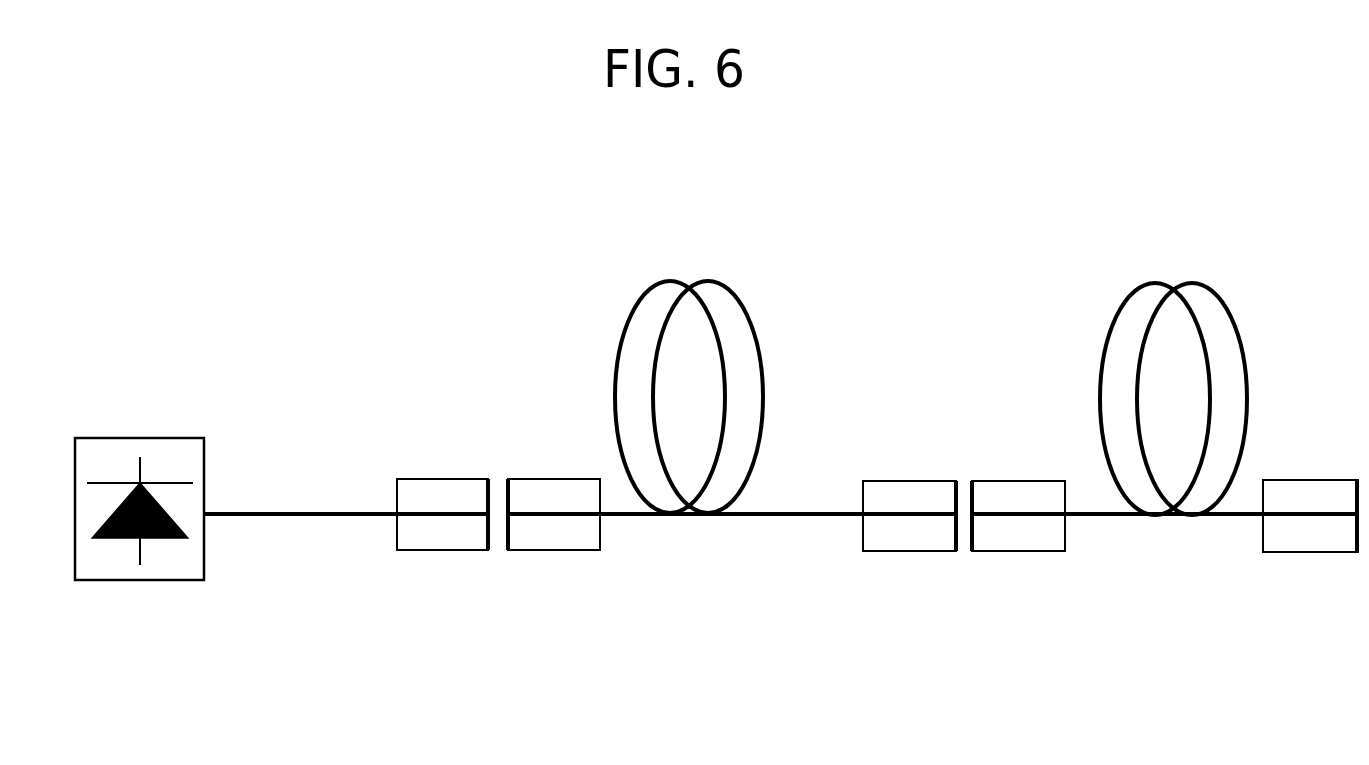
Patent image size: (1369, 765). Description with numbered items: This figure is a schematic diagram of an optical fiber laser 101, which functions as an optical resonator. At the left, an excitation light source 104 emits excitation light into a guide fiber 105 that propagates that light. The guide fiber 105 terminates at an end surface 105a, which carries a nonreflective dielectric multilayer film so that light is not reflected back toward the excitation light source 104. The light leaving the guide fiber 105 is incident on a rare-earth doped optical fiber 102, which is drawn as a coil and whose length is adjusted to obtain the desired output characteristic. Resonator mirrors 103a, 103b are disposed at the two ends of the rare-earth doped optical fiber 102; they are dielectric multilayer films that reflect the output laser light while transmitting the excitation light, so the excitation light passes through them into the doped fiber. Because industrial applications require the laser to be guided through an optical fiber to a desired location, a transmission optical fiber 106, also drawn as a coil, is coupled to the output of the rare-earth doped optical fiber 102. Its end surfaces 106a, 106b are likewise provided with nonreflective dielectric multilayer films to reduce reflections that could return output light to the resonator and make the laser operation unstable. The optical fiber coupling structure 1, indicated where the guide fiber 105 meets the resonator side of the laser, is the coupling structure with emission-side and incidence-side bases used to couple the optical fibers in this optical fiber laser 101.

The optical fiber coupling structure 1 is at (476, 458).
The fiber laser 101 is at (863, 300).
The rare-earth doped optical fiber 102 is at (705, 515).
The resonator mirror 103a is at (547, 550).
The resonator mirror 103b is at (905, 551).
The excitation light source 104 is at (150, 580).
The guide fiber 105 is at (323, 514).
The end surface of the guide fiber 105a is at (435, 550).
The transmission optical fiber 106 is at (1183, 517).
The end surface of the transmission fiber 106a is at (1018, 551).
The end surface of the transmission fiber 106b is at (1317, 552).